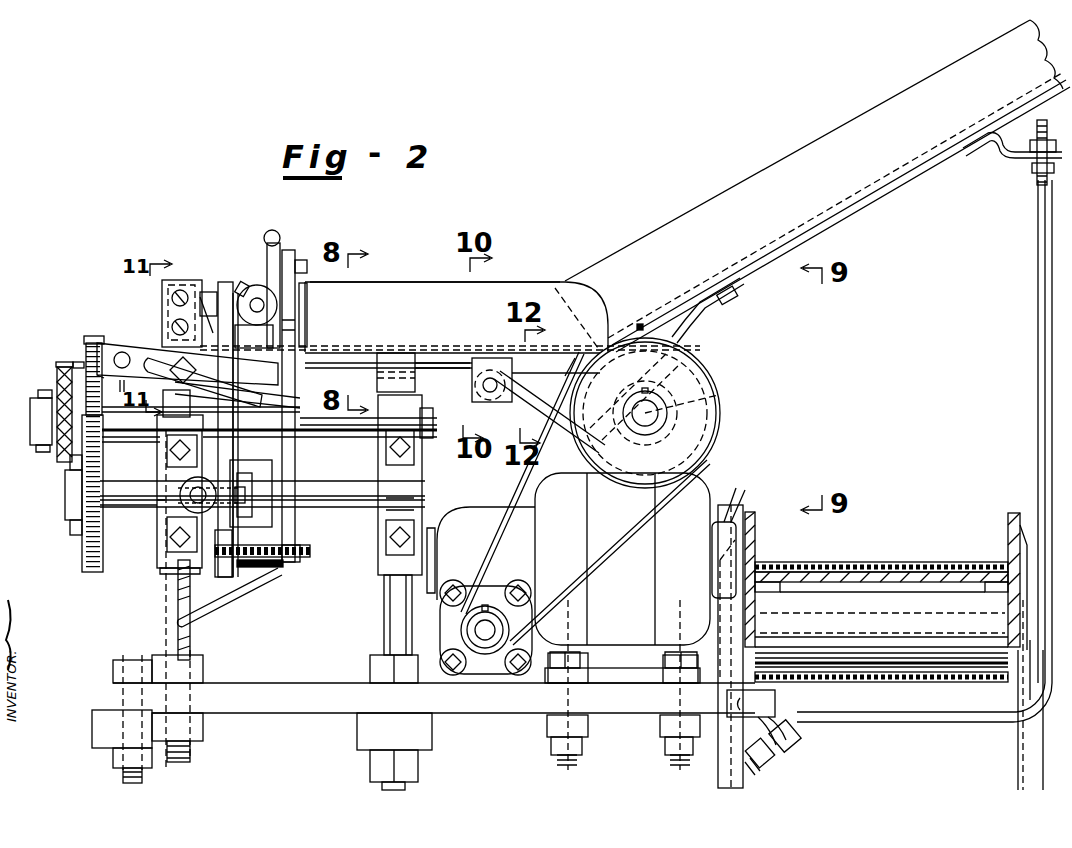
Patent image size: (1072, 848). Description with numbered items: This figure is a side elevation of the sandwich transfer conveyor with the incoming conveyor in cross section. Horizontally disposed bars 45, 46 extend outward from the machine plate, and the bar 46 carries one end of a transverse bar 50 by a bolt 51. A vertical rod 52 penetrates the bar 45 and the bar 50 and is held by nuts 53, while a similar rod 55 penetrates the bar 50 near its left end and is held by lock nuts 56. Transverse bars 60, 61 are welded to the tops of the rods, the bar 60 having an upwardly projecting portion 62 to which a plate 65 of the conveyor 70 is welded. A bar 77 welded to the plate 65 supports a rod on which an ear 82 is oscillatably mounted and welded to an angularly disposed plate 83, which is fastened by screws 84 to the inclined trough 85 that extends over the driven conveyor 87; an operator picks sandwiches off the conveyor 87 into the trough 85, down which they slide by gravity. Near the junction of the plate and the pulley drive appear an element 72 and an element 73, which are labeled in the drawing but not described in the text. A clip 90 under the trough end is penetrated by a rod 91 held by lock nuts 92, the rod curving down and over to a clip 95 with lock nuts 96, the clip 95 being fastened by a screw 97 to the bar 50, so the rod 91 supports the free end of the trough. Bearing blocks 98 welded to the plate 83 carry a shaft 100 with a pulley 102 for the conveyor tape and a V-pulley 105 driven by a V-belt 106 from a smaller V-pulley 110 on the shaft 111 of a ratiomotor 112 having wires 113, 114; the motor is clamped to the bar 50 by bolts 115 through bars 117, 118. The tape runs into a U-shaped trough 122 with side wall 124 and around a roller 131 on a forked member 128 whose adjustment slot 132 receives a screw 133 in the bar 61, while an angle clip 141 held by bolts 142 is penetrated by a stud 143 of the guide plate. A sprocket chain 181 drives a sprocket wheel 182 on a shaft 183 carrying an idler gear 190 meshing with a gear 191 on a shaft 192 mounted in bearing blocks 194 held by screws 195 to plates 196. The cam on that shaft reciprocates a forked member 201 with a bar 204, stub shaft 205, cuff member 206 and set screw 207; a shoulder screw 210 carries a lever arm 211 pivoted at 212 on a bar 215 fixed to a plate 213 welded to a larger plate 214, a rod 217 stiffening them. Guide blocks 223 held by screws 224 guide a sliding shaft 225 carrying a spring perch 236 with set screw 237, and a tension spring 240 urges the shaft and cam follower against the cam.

The bar 45 is at (432, 732).
The bar 46 is at (92, 731).
The transverse bar 50 is at (292, 710).
The bolt 51 is at (142, 776).
The rod 52 is at (384, 617).
The nuts 53 is at (370, 665).
The rod 55 is at (166, 628).
The lock nuts 56 is at (204, 666).
The transverse bar 60 is at (412, 381).
The transverse bar 61 is at (157, 379).
The upwardly projecting portion 62 is at (410, 358).
The plate 65 is at (458, 360).
The conveyor 70 is at (506, 280).
The link 72 is at (488, 398).
The bearing block 73 is at (482, 388).
The bar 77 is at (566, 356).
The ear 82 is at (633, 322).
The plate 83 is at (694, 320).
The screws 84 is at (736, 296).
The trough 85 is at (838, 203).
The driven conveyor 87 is at (926, 562).
The clip 90 is at (996, 154).
The rod 91 is at (1036, 212).
The lock nuts 92 is at (1048, 132).
The clip 95 is at (795, 750).
The lock nuts 96 is at (797, 735).
The screw 97 is at (776, 695).
The bearing blocks 98 is at (722, 397).
The shaft 100 is at (646, 426).
The pulley 102 is at (722, 363).
The V-pulley 105 is at (722, 416).
The V-belt 106 is at (612, 540).
The V-pulley 110 is at (509, 584).
The shaft 111 is at (485, 640).
The ratiomotor 112 is at (497, 510).
The electric wire 113 is at (745, 492).
The electric wire 114 is at (729, 488).
The bolts 115 is at (576, 700).
The bar 117 is at (582, 733).
The bar 118 is at (665, 734).
The U-shaped trough 122 is at (365, 352).
The side wall 124 is at (432, 281).
The forked member 128 is at (113, 342).
The roller 131 is at (113, 386).
The adjustment slot 132 is at (174, 358).
The screw 133 is at (180, 410).
The angle clip 141 is at (198, 285).
The bolts 142 is at (170, 294).
The stud 143 is at (168, 312).
The sprocket chain 181 is at (80, 360).
The sprocket wheel 182 is at (57, 372).
The shaft 183 is at (30, 409).
The idler gear 190 is at (88, 340).
The gear 191 is at (82, 541).
The shaft 192 is at (65, 490).
The bearing blocks 194 is at (168, 534).
The screws 195 is at (170, 446).
The plates 196 is at (162, 570).
The forked member 201 is at (256, 470).
The bar 204 is at (255, 485).
The stub shaft 205 is at (170, 488).
The cuff member 206 is at (230, 535).
The set screw 207 is at (180, 485).
The shoulder screw 210 is at (247, 503).
The lever arm 211 is at (233, 441).
The pivot 212 is at (214, 578).
The plate 213 is at (295, 455).
The plate 214 is at (288, 375).
The bar 215 is at (288, 570).
The rod 217 is at (200, 608).
The guide blocks 223 is at (295, 324).
The screws 224 is at (258, 285).
The shaft 225 is at (258, 298).
The spring perch 236 is at (307, 266).
The set screw 237 is at (238, 284).
The tension spring 240 is at (276, 230).